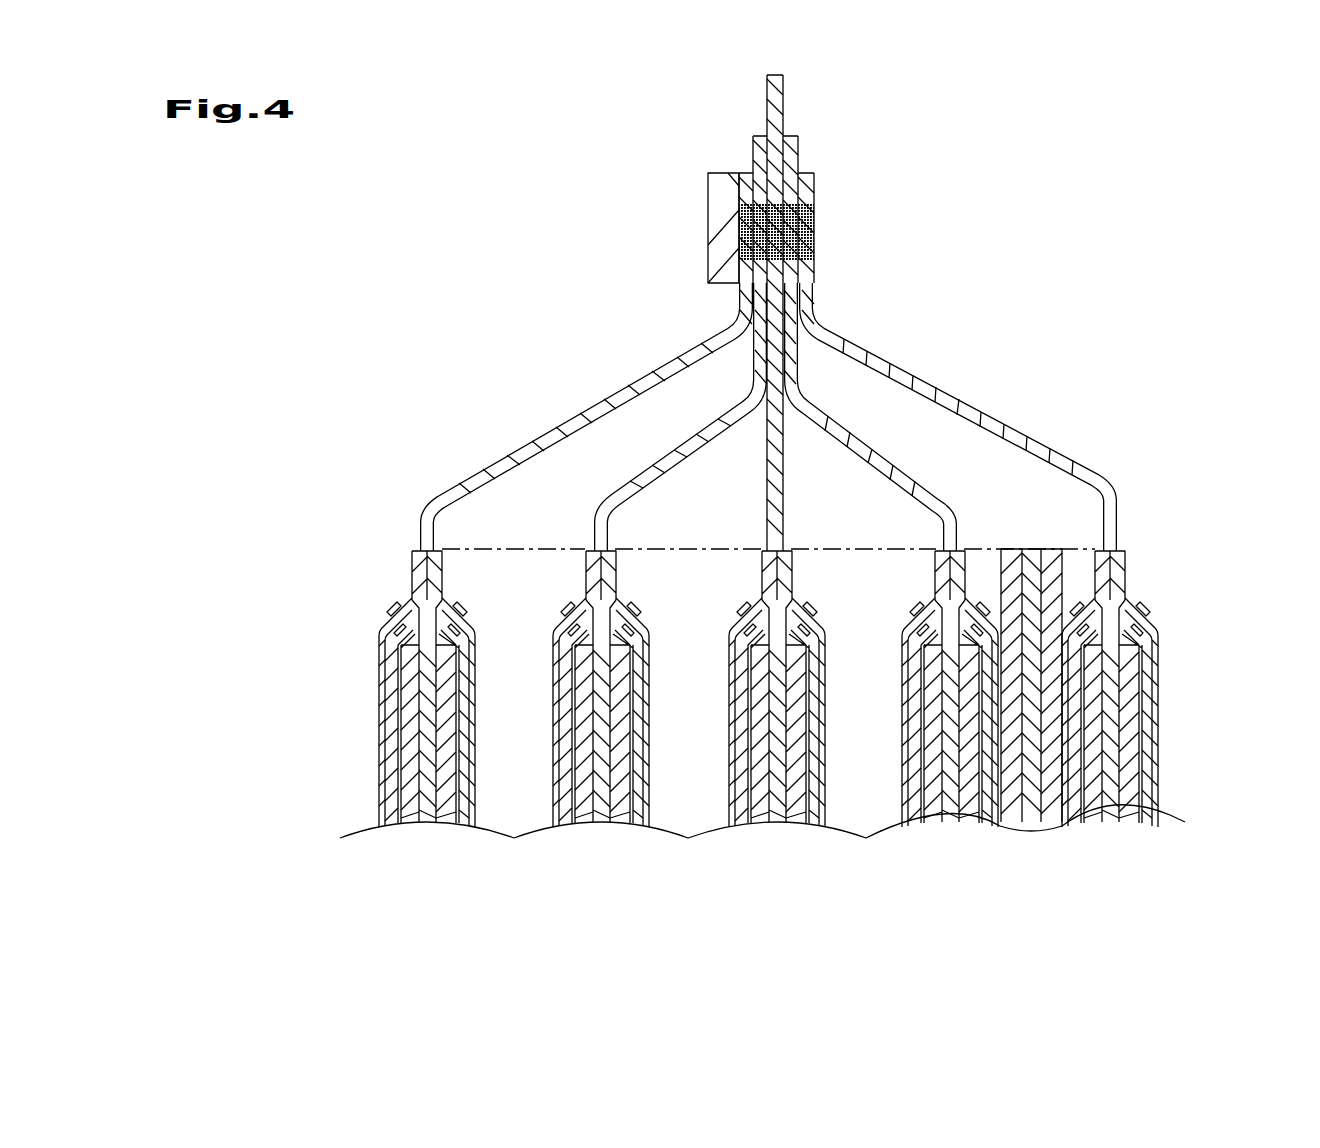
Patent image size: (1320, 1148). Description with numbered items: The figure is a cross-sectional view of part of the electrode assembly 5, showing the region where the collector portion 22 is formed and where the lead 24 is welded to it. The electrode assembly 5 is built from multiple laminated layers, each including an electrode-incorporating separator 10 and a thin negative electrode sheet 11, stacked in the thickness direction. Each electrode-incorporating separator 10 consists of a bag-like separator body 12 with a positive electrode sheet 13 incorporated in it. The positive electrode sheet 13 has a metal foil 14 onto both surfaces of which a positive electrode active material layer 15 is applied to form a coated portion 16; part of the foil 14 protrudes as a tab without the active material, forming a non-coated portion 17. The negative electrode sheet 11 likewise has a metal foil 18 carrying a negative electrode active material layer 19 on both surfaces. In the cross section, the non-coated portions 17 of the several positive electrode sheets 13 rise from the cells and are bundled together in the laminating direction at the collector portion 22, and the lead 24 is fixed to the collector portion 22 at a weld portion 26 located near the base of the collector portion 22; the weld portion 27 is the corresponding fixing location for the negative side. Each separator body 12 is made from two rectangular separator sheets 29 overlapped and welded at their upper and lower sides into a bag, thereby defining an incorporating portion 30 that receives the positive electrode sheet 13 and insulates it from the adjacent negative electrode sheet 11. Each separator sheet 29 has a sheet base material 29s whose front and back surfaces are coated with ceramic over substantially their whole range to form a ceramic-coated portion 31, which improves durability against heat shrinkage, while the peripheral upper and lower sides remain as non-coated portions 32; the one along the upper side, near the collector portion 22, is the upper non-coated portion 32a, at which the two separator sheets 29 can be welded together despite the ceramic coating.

The electrode assembly 5 is at (530, 184).
The electrode-incorporating separator 10 is at (412, 582).
The negative electrode sheet 11 is at (1031, 730).
The separator body 12 is at (385, 618).
The positive electrode sheet 13 is at (424, 731).
The foil 14 is at (427, 826).
The positive electrode active material layer 15 is at (445, 826).
The coated portion 16 is at (476, 672).
The non-coated portion 17 is at (672, 358).
The foil 18 is at (1031, 714).
The negative electrode active material layer 19 is at (1051, 826).
The collector portion 22 is at (836, 179).
The lead 24 is at (708, 217).
The weld portion 26 is at (836, 232).
The weld portion 27 is at (814, 243).
The separator sheet 29 is at (379, 830).
The sheet base material 29s is at (447, 612).
The incorporating portion 30 is at (392, 790).
The ceramic-coated portion 31 is at (384, 720).
The non-coated portion 32 is at (785, 499).
The upper non-coated portion 32a is at (436, 540).